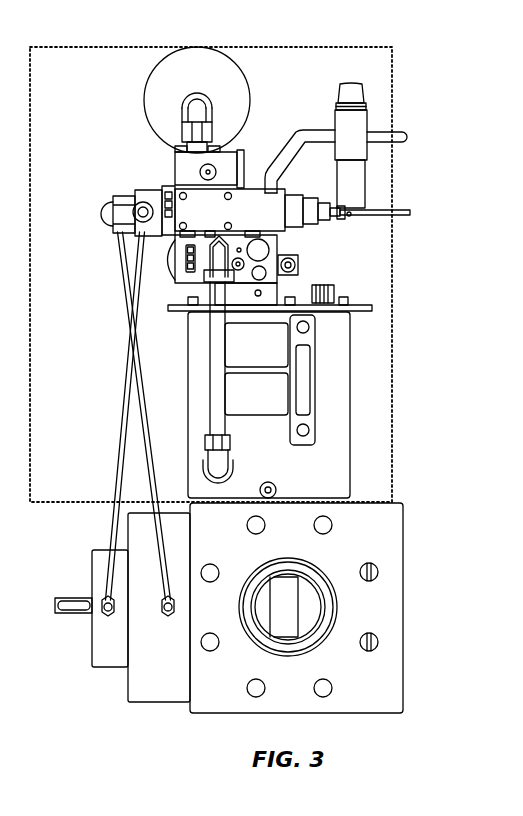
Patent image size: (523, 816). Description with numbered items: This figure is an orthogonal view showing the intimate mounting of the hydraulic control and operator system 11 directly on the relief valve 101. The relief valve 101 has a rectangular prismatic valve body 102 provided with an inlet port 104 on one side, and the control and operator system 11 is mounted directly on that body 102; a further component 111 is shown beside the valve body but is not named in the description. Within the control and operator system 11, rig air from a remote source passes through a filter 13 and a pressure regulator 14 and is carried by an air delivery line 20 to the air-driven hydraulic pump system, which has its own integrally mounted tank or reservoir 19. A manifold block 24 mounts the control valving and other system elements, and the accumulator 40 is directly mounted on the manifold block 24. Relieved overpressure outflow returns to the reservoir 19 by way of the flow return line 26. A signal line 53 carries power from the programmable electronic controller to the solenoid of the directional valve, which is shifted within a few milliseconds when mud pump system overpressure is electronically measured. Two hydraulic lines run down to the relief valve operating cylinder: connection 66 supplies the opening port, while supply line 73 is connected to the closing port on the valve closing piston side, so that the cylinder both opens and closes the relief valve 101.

The control and operator system 11 is at (345, 46).
The accumulator 40 is at (238, 66).
The air delivery line 20 is at (272, 160).
The filter 13 is at (411, 145).
The pressure regulator 14 is at (367, 122).
The signal line 53 is at (404, 208).
The manifold block 24 is at (299, 250).
The reservoir 19 is at (352, 358).
The flow return line 26 is at (210, 362).
The supply line 73 is at (120, 418).
The connection 66 is at (145, 457).
The bracket 111 is at (158, 702).
The relief valve 101 is at (403, 675).
The valve body 102 is at (403, 533).
The inlet port 104 is at (320, 607).